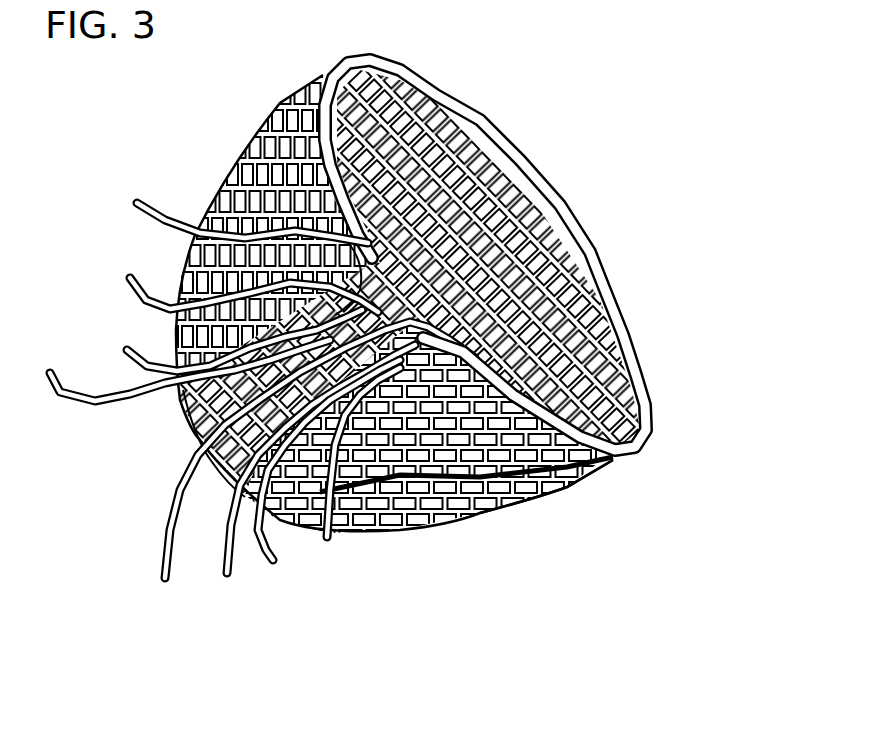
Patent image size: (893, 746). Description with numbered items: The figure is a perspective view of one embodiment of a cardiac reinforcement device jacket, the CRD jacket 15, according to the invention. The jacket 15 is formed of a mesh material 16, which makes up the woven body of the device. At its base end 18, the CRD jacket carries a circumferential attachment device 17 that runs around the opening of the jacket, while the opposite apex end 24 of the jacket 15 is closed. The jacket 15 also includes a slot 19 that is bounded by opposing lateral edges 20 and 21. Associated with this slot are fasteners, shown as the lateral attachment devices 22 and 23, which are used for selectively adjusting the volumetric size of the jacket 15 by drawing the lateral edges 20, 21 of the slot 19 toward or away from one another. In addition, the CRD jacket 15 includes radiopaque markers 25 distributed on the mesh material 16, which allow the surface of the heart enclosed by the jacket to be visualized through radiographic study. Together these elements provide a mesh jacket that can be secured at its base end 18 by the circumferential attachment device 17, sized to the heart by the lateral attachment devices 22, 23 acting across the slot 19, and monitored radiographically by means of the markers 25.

The CRD jacket 15 is at (519, 255).
The mesh material 16 is at (567, 494).
The circumferential attachment device 17 is at (209, 204).
The base end 18 is at (446, 373).
The slot 19 is at (245, 308).
The lateral edge 20 is at (239, 371).
The lateral edge 21 is at (329, 460).
The lateral attachment device 22 is at (320, 479).
The lateral attachment device 23 is at (188, 361).
The apex end 24 is at (187, 443).
The radiopaque markers 25 is at (466, 501).